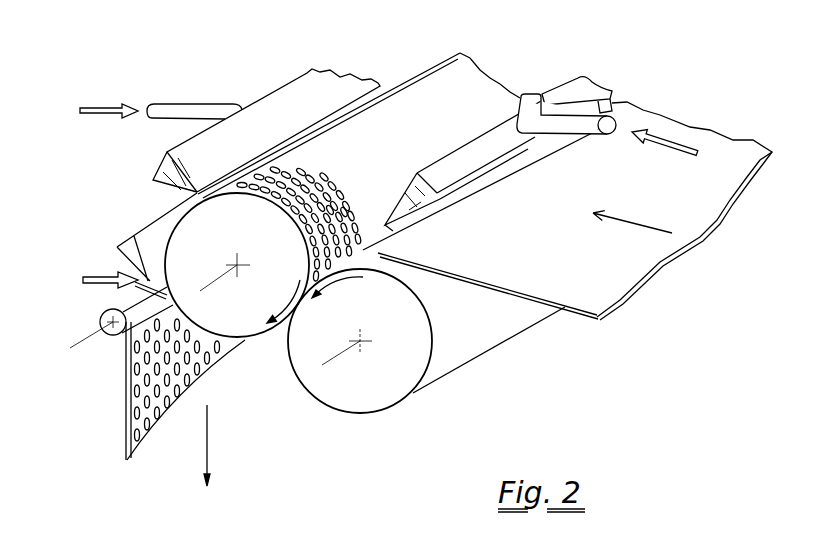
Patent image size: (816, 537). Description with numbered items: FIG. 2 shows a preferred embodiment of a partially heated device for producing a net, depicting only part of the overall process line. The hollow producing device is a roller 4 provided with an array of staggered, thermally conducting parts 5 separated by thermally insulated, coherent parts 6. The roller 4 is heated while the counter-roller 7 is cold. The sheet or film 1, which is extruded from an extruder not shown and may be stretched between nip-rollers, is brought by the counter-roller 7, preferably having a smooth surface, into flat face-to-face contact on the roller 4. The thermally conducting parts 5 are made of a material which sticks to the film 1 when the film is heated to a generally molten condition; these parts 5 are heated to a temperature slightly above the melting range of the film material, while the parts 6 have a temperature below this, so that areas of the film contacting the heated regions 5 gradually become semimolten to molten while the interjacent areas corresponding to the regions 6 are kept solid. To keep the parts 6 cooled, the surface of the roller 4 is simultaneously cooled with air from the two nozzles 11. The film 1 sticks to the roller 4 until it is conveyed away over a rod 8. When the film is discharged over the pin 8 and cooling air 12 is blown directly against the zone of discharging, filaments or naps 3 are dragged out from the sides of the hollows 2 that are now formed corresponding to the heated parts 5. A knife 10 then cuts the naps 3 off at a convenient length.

The sheet or film 1 is at (580, 292).
The hollows 2 is at (150, 452).
The filaments or naps 3 is at (146, 289).
The roller 4 is at (238, 341).
The thermally conducting parts 5 is at (338, 203).
The thermally insulated, coherent parts 6 is at (342, 205).
The counter-roller 7 is at (380, 408).
The rod 8 is at (115, 336).
The knife 10 is at (147, 245).
The nozzles 11 is at (327, 88).
The cooling air 12 is at (83, 280).